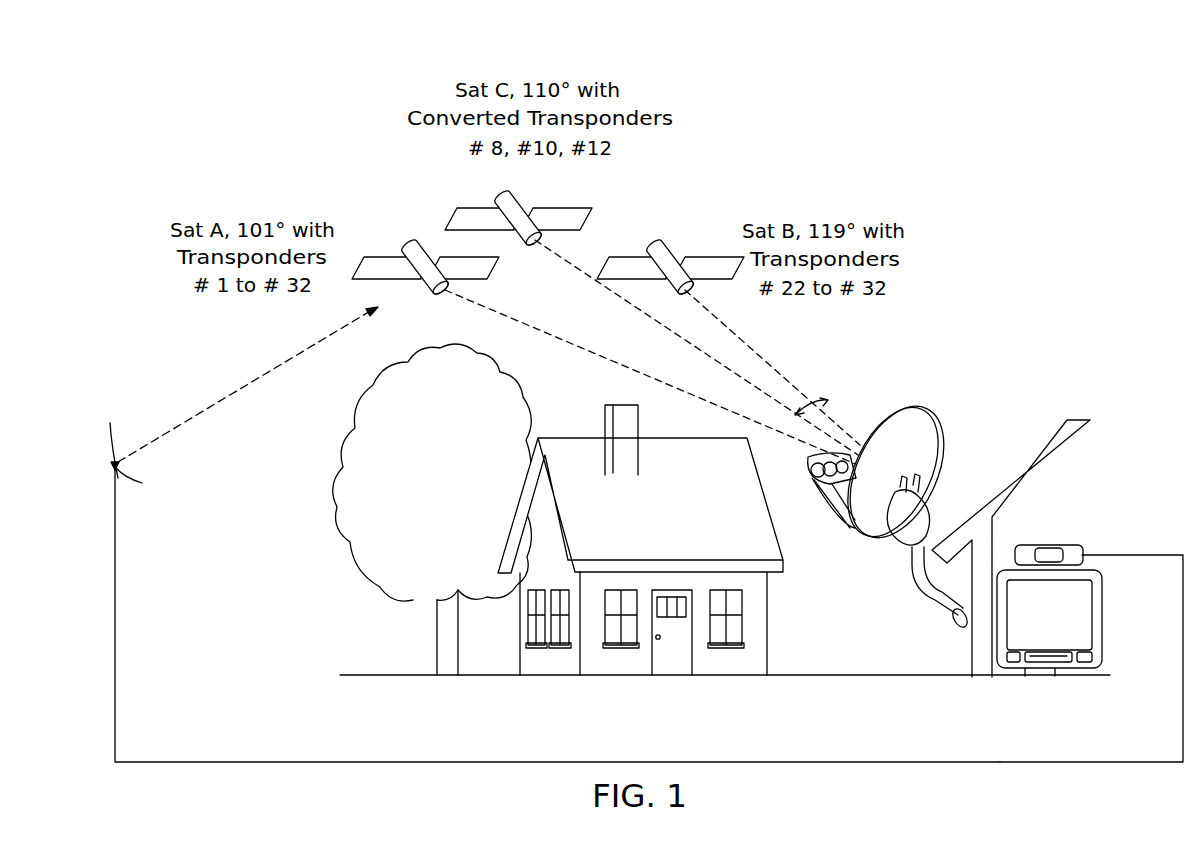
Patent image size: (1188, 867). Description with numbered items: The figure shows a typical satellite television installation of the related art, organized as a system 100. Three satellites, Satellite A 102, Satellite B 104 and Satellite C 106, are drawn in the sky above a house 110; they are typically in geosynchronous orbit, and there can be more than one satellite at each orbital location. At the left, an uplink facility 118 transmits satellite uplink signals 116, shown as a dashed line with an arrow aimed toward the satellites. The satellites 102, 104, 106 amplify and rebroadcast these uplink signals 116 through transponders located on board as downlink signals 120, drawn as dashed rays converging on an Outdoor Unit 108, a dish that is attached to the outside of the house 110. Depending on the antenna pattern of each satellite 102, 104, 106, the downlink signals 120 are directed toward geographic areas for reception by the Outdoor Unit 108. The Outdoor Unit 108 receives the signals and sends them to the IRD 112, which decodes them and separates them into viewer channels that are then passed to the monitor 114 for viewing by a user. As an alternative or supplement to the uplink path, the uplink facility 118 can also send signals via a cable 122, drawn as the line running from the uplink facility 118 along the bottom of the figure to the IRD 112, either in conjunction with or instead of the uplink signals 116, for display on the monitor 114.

The system 100 is at (858, 75).
The Satellite A 102 is at (388, 246).
The Satellite B 104 is at (678, 242).
The Satellite C 106 is at (596, 194).
The Outdoor Unit 108 is at (905, 409).
The house 110 is at (1036, 440).
The IRD 112 is at (1058, 544).
The monitor 114 is at (1104, 615).
The satellite uplink signals 116 is at (213, 398).
The uplink facility 118 is at (112, 465).
The downlink signals 120 is at (800, 390).
The cable 122 is at (1158, 554).